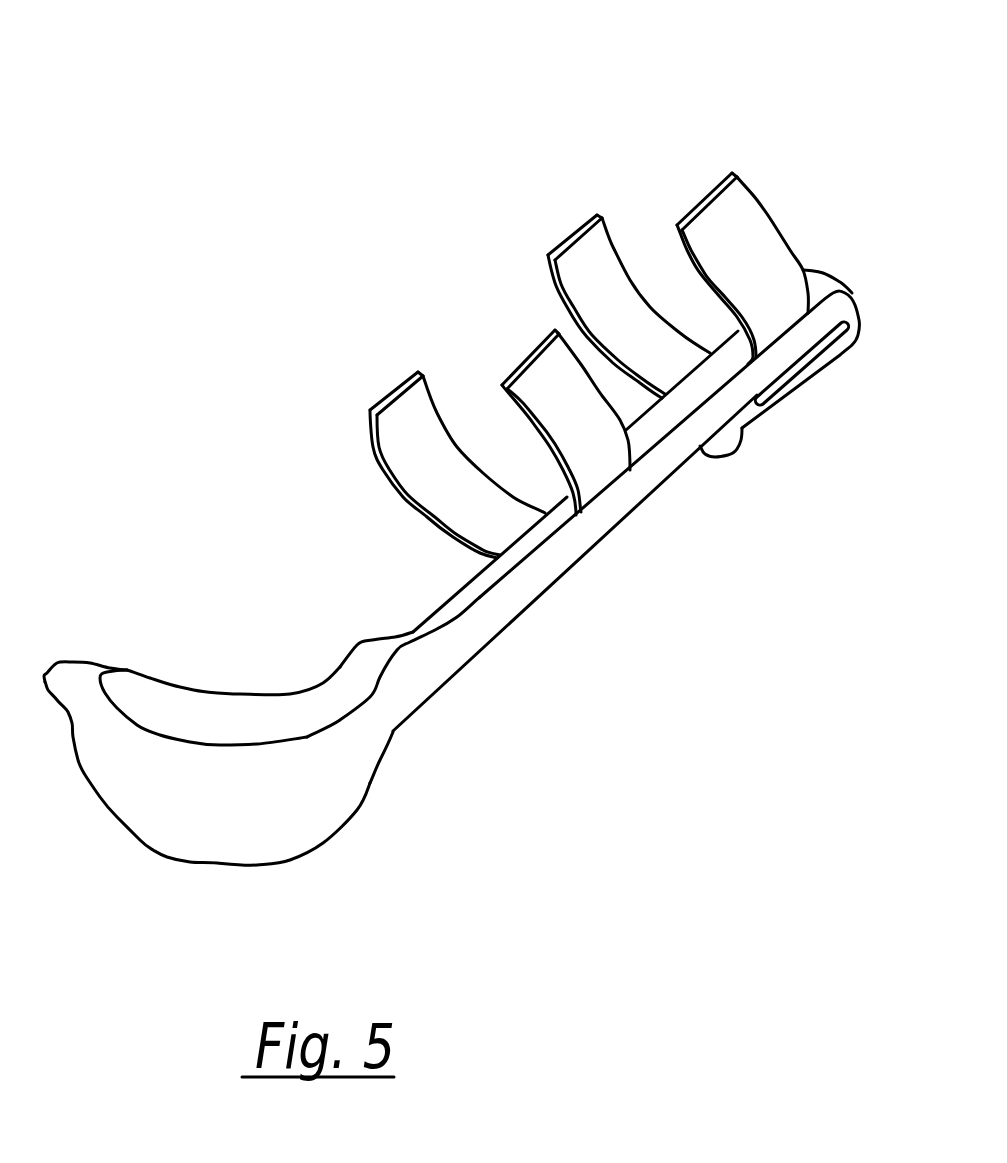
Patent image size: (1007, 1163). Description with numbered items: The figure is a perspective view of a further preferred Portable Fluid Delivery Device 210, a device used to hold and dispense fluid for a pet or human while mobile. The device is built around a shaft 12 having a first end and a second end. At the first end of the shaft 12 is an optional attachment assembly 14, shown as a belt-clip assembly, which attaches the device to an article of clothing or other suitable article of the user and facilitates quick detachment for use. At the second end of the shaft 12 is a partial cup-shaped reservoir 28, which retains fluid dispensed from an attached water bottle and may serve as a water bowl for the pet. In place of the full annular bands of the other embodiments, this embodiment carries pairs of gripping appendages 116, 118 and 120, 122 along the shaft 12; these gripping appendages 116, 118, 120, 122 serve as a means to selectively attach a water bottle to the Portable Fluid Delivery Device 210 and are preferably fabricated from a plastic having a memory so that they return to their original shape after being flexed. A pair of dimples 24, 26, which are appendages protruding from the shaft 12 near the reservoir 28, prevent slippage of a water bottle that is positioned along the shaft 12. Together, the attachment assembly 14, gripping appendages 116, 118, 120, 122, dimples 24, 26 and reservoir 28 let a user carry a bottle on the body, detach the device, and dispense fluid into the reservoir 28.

The Portable Fluid Delivery Device 210 is at (556, 158).
The shaft 12 is at (562, 558).
The attachment assembly 14 is at (827, 365).
The dimple 24 is at (362, 640).
The dimple 26 is at (407, 650).
The reservoir 28 is at (192, 805).
The gripping appendage 116 is at (582, 273).
The gripping appendage 118 is at (733, 217).
The gripping appendage 120 is at (398, 435).
The gripping appendage 122 is at (583, 410).